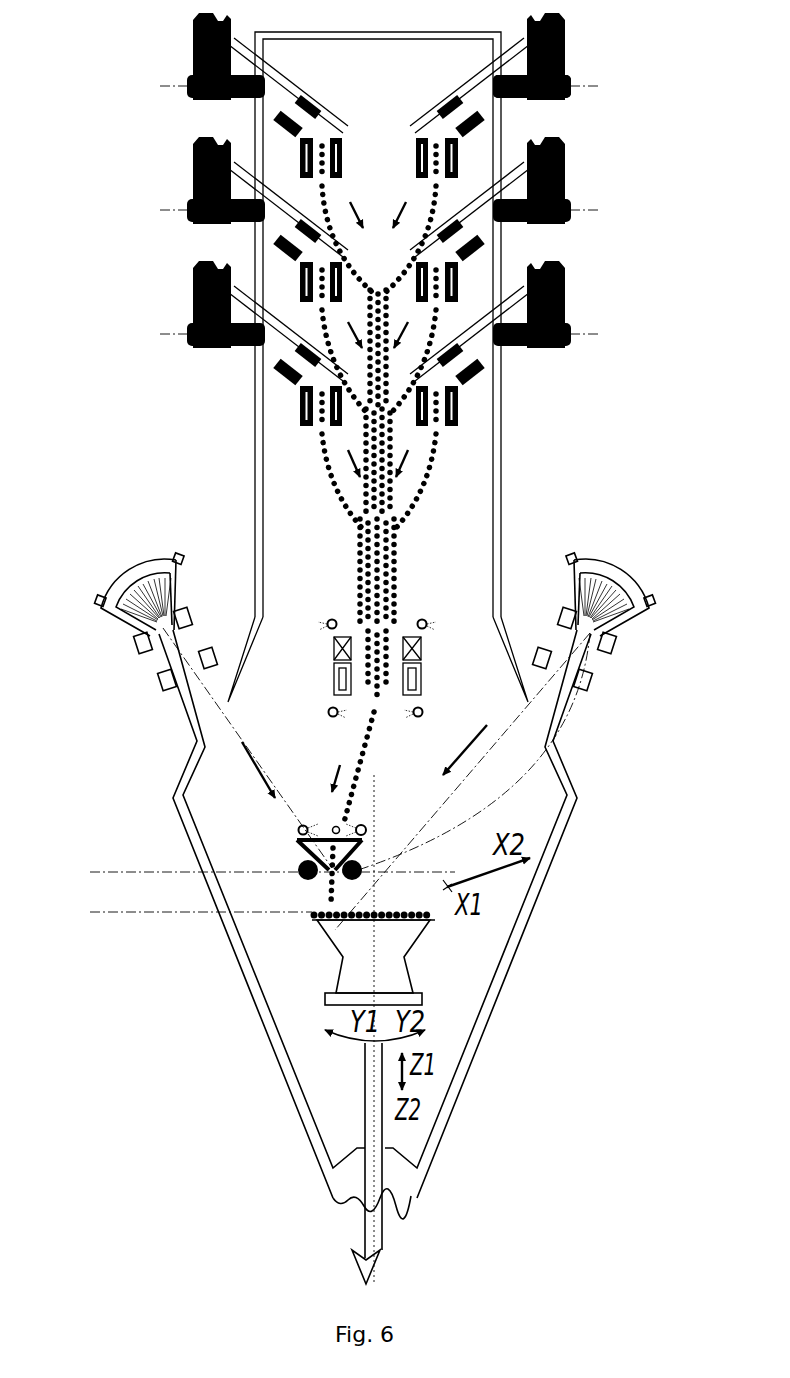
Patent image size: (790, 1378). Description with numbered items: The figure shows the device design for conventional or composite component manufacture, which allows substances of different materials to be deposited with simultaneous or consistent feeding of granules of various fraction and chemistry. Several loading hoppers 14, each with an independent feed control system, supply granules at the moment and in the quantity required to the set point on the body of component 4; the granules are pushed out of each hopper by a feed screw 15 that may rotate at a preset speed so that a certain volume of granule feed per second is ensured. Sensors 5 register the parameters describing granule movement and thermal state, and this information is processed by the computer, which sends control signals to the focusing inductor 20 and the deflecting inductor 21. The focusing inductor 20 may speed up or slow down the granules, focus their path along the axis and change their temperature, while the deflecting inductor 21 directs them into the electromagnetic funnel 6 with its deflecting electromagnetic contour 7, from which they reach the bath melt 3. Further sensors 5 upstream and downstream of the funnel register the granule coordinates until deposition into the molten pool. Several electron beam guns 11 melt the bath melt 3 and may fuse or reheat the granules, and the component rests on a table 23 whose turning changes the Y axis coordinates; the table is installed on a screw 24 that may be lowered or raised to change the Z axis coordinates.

The bath melt 3 is at (322, 921).
The body of component 4 is at (402, 934).
The sensors 5 is at (427, 624).
The electromagnetic funnel 6 is at (347, 850).
The deflecting electromagnetic contour 7 is at (356, 878).
The electron beam guns 11 is at (185, 575).
The loading hoppers 14 is at (193, 56).
The feed screw 15 is at (563, 102).
The focusing inductor 20 is at (334, 650).
The deflecting inductor 21 is at (334, 680).
The table 23 is at (418, 1000).
The screw 24 is at (372, 1103).